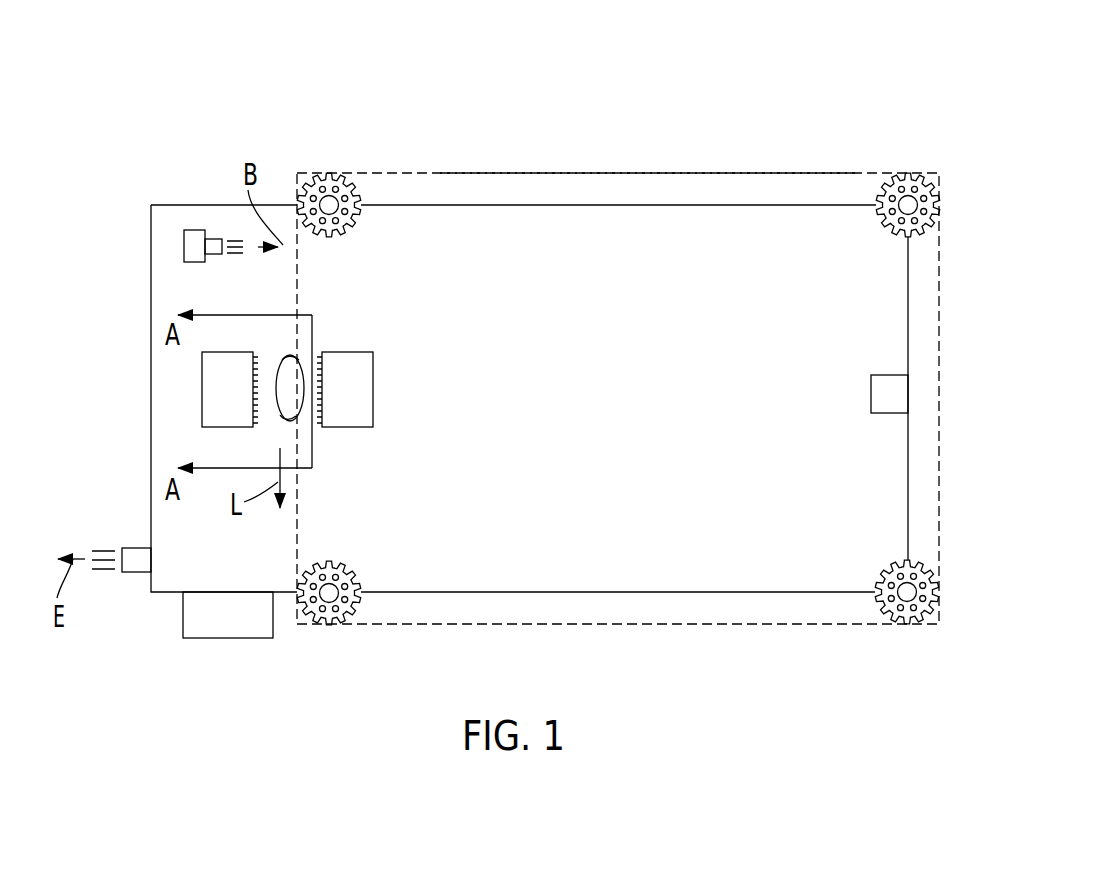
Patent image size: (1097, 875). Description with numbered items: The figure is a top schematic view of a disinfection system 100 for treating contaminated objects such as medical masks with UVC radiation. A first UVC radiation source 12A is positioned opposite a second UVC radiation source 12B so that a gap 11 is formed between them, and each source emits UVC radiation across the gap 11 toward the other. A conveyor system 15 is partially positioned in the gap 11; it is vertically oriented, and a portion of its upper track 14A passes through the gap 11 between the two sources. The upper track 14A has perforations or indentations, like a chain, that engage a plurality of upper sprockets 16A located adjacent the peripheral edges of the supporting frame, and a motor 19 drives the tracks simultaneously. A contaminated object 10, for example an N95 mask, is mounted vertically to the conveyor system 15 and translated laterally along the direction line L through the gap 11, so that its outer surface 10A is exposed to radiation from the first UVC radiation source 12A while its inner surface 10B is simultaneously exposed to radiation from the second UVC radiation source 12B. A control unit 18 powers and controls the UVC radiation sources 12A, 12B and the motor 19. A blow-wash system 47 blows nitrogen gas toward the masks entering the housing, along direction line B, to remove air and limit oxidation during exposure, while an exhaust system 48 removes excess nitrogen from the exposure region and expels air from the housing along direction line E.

The disinfection system 100 is at (168, 102).
The conveyor system 15 is at (626, 152).
The upper track 14A is at (437, 171).
The upper sprockets 16A is at (312, 178).
The blow-wash system 47 is at (184, 246).
The exhaust system 48 is at (140, 546).
The control unit 18 is at (228, 640).
The motor 19 is at (871, 393).
The first UVC radiation source 12A is at (200, 388).
The second UVC radiation source 12B is at (375, 388).
The contaminated object 10 is at (264, 340).
The outer surface 10A is at (283, 417).
The inner surface 10B is at (303, 360).
The gap 11 is at (320, 434).